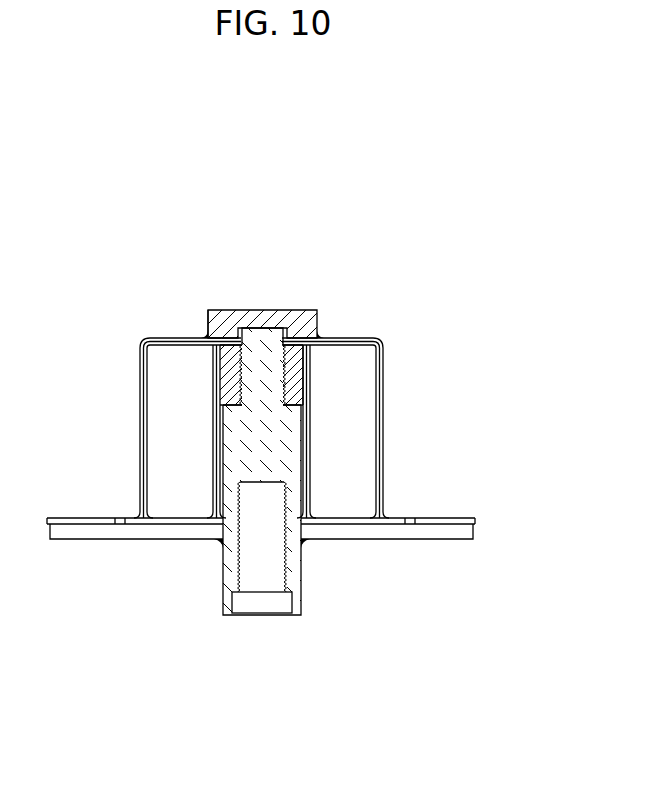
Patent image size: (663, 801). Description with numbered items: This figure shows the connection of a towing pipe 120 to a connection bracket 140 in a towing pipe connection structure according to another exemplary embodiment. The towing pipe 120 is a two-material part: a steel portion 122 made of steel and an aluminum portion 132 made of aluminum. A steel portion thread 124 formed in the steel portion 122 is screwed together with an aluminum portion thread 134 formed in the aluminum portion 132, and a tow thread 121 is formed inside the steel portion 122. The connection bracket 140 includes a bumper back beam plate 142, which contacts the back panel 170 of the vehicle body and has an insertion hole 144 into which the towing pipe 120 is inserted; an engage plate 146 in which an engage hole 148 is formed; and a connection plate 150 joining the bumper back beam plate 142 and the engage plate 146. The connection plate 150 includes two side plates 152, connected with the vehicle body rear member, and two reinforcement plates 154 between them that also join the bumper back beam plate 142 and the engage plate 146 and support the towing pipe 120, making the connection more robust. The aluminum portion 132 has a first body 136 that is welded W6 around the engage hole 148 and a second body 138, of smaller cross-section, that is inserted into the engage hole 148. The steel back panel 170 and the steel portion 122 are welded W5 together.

The towing pipe 120 is at (267, 290).
The tow thread 121 is at (282, 578).
The steel portion 122 is at (297, 585).
The steel portion thread 124 is at (230, 430).
The aluminum portion 132 is at (148, 246).
The aluminum portion thread 134 is at (225, 383).
The first body 136 is at (217, 316).
The second body 138 is at (227, 355).
The connection bracket 140 is at (427, 488).
The bumper back beam plate 142 is at (460, 518).
The insertion hole 144 is at (284, 543).
The engage plate 146 is at (353, 340).
The engage hole 148 is at (275, 330).
The connection plate 150 is at (458, 362).
The side plate 152 is at (145, 488).
The reinforcement plate 154 is at (215, 459).
The back panel 170 is at (100, 540).
The weld W5 is at (218, 543).
The weld W6 is at (325, 334).